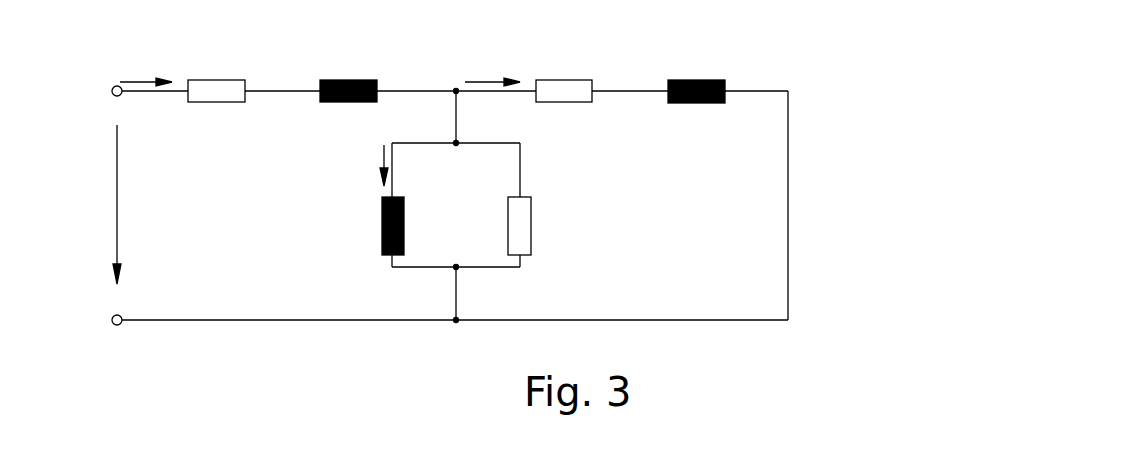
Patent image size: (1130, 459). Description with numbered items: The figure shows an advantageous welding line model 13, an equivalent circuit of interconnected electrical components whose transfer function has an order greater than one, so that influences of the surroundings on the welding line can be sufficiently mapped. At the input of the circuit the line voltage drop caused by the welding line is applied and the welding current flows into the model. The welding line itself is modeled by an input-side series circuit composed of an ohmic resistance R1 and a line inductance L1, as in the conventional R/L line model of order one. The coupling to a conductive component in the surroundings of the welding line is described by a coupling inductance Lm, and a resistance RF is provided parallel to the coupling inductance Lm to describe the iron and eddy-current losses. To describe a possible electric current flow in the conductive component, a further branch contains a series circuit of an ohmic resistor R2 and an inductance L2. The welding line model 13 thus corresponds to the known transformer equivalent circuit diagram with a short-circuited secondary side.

The welding line model 13 is at (498, 173).
The ohmic resistance R1 is at (216, 74).
The line inductance L1 is at (348, 74).
The ohmic resistor R2 is at (564, 74).
The inductance L2 is at (696, 75).
The coupling inductance Lm is at (372, 226).
The resistance RF is at (537, 228).